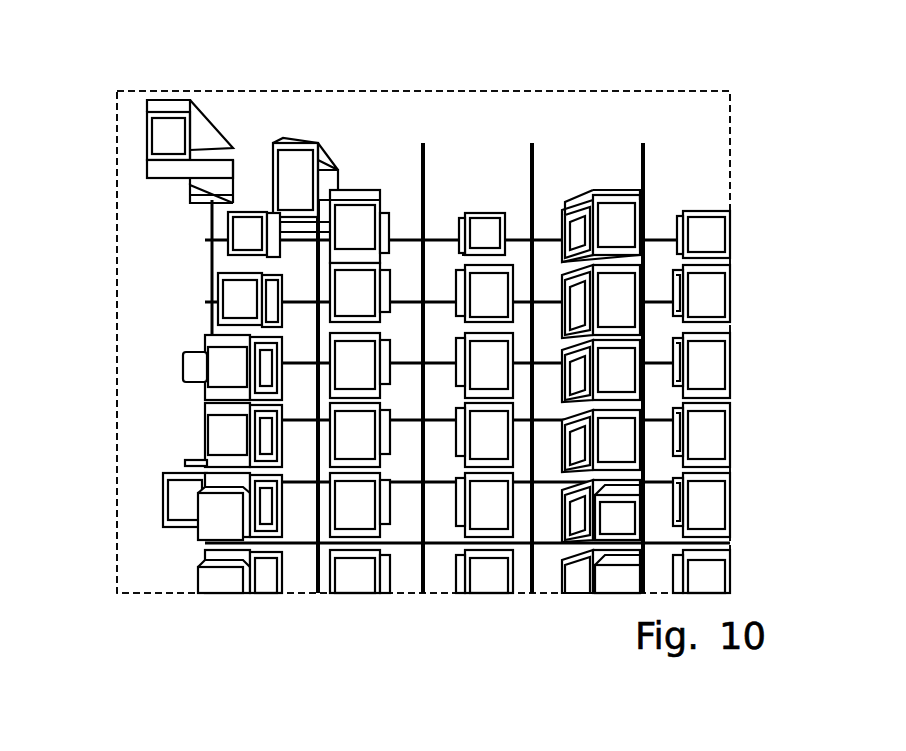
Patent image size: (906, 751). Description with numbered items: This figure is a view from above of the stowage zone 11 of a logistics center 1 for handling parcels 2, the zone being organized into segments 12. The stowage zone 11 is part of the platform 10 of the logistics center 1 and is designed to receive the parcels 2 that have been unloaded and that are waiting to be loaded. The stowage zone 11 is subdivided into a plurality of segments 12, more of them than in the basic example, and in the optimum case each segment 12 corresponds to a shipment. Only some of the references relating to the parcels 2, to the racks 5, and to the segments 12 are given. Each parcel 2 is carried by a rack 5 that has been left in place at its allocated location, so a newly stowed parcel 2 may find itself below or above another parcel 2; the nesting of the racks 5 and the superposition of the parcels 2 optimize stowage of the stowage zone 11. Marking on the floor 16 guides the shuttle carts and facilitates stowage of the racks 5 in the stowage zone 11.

The logistics center 1 is at (158, 86).
The parcel 2 is at (613, 358).
The rack 5 is at (208, 122).
The platform 10 is at (143, 242).
The stowage zone 11 is at (682, 170).
The segment 12 is at (401, 198).
The marking on the floor 16 is at (312, 575).